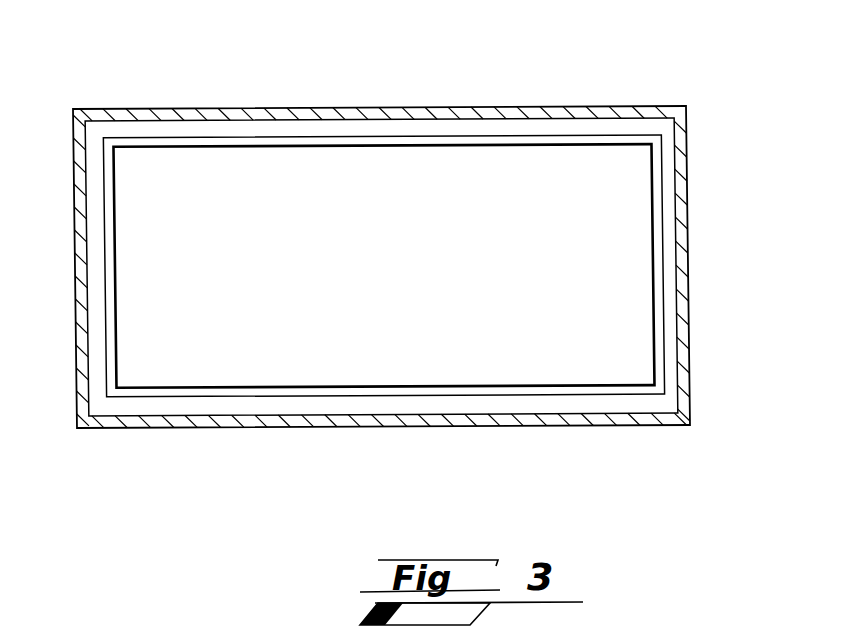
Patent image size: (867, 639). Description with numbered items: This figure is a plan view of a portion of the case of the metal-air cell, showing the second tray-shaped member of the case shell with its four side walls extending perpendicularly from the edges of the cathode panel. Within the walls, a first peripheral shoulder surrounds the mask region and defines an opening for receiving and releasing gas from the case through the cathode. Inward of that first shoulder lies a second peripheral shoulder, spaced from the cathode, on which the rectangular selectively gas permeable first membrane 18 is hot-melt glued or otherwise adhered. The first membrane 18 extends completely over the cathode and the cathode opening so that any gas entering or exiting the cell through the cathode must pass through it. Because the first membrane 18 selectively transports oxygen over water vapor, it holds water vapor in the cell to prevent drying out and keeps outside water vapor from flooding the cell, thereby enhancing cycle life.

The selectively permeable first membrane 18 is at (412, 268).